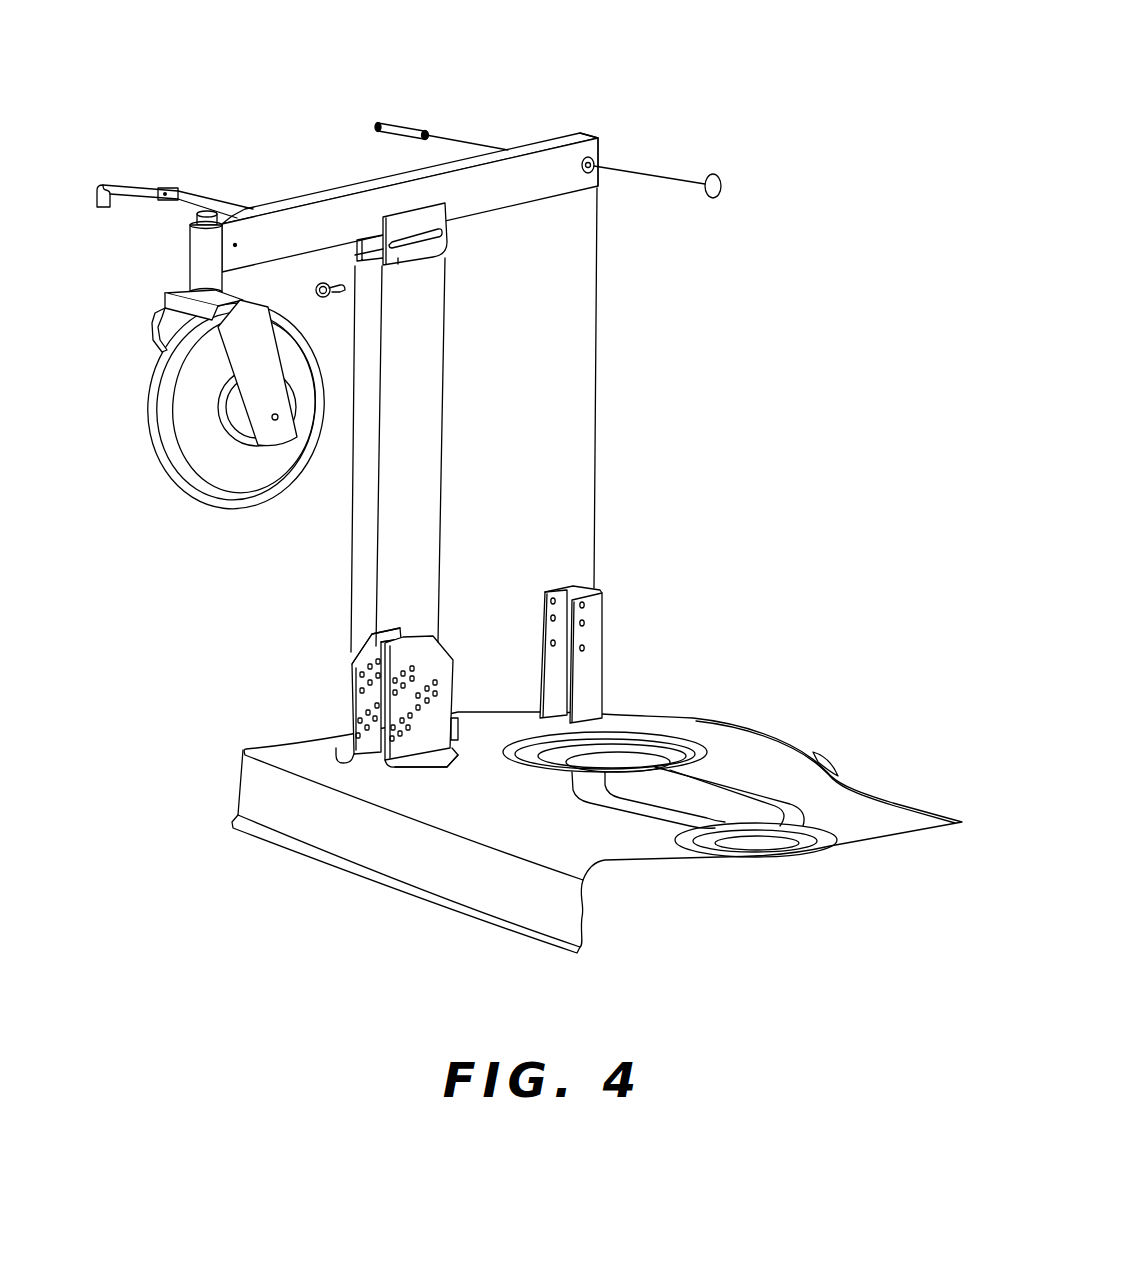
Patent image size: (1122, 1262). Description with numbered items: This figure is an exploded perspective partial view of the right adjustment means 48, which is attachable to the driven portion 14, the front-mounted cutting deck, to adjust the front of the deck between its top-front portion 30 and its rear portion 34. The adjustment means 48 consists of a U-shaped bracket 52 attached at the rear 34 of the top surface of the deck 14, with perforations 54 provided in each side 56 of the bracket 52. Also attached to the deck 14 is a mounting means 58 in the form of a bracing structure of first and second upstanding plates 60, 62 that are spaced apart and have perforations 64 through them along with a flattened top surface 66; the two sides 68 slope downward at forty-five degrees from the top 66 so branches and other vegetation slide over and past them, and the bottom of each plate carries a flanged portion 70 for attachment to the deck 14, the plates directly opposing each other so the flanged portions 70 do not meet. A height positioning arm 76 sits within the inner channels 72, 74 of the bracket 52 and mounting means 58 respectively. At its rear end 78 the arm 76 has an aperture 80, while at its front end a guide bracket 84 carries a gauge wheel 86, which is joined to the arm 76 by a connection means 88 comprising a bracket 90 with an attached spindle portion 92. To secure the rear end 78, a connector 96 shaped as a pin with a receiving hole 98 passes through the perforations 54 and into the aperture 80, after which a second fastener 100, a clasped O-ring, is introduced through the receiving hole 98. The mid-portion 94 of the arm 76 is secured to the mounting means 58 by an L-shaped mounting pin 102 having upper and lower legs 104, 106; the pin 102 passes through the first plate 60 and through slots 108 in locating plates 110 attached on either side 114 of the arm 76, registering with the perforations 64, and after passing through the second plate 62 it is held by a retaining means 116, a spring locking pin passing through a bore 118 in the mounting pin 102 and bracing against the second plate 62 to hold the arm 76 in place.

The driven portion 14 is at (776, 726).
The top-front portion 30 is at (540, 848).
The rear portion 34 is at (665, 722).
The right adjustment means 48 is at (270, 96).
The U-shaped bracket 52 is at (598, 587).
The perforations 54 is at (583, 648).
The sides 56 is at (549, 679).
The mounting means 58 is at (323, 648).
The first upstanding plate 60 is at (358, 700).
The second upstanding plate 62 is at (393, 758).
The perforations 64 is at (355, 719).
The flattened top surface 66 is at (384, 632).
The sides 68 is at (361, 644).
The flanged portion 70 is at (446, 758).
The inner channel 72 is at (568, 590).
The inner channel 74 is at (398, 638).
The height positioning arm 76 is at (353, 183).
The end 78 is at (568, 150).
The aperture 80 is at (596, 163).
The guide bracket 84 is at (166, 335).
The gauge wheel 86 is at (205, 490).
The connection means 88 is at (170, 271).
The bracket 90 is at (167, 305).
The spindle portion 92 is at (197, 235).
The mid-portion 94 is at (437, 193).
The connector 96 is at (395, 125).
The receiving hole 98 is at (426, 133).
The second fastener 100 is at (718, 180).
The mounting pin 102 is at (113, 176).
The upper leg 104 is at (138, 185).
The lower leg 106 is at (103, 202).
The slots 108 is at (425, 248).
The locating plates 110 is at (355, 257).
The side 114 is at (562, 192).
The retaining means 116 is at (329, 298).
The bore 118 is at (178, 191).